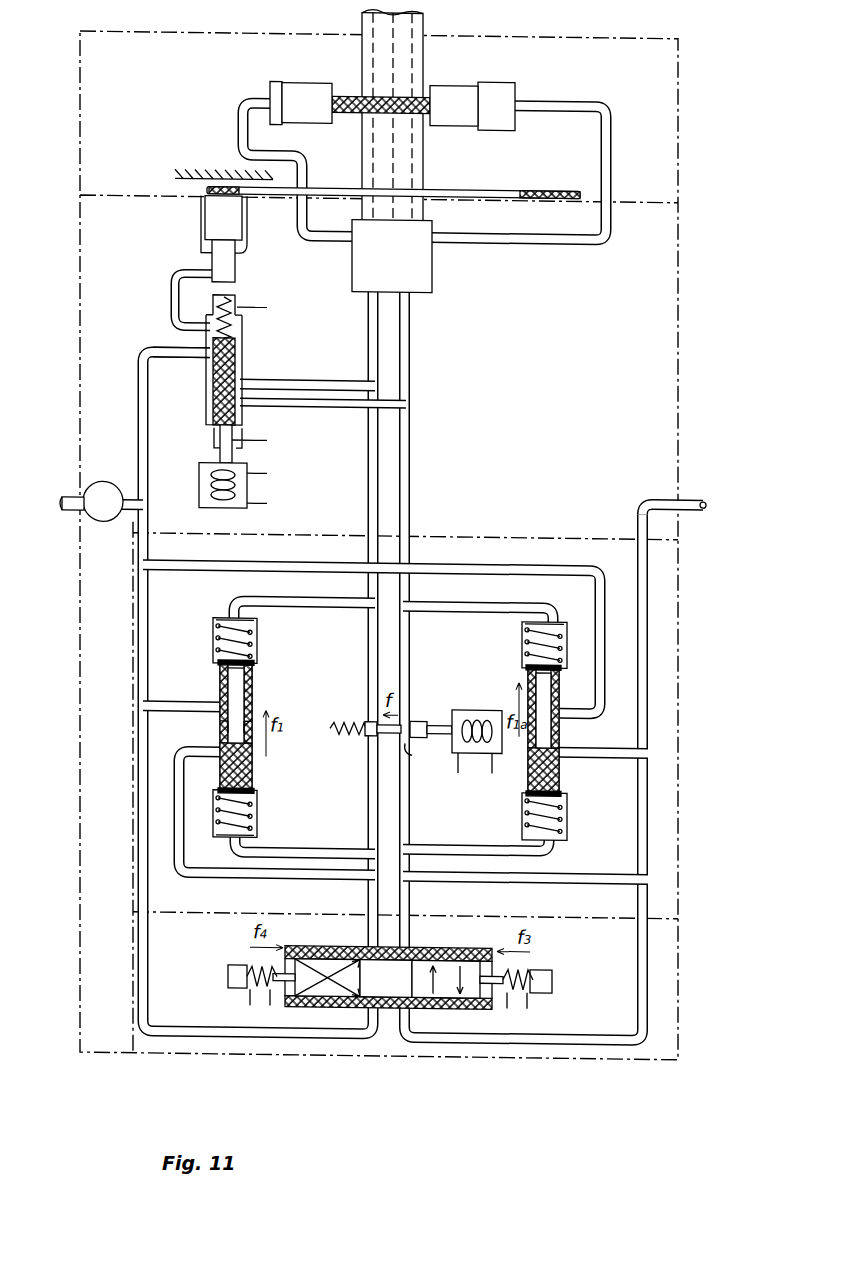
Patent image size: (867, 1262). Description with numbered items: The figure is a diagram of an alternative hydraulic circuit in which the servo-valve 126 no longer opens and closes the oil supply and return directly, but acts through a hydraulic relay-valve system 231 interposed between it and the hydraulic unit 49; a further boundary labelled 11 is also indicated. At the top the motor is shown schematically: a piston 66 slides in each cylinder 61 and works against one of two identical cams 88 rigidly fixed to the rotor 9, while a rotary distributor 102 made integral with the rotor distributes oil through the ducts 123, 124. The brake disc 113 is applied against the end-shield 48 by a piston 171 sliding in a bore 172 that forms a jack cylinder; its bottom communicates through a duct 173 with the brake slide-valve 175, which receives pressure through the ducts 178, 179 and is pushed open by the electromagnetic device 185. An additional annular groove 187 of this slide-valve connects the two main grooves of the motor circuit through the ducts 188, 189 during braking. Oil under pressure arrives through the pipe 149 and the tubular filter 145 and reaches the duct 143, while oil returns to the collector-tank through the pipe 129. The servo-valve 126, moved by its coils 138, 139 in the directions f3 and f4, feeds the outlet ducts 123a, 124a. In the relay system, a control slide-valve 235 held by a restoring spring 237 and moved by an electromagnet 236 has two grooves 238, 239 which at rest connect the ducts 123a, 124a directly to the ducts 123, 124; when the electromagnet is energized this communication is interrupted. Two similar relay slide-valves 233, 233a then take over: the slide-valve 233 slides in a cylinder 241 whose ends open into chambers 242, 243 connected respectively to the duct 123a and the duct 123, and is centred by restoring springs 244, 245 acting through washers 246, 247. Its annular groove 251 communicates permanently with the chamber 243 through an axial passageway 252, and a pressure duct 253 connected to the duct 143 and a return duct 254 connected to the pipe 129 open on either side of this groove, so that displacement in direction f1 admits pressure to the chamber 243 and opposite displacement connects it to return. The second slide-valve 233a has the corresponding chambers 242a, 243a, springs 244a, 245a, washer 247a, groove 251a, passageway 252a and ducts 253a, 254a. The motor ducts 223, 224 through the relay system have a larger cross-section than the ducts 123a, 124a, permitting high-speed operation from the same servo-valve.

The rotor 9 is at (424, 24).
The housing 11 is at (669, 128).
The end-shield 48 is at (245, 178).
The hydraulic unit 49 is at (663, 374).
The cylinder 61 is at (270, 84).
The piston 66 is at (306, 90).
The cam 88 is at (437, 111).
The rotary distributor 102 is at (432, 275).
The brake disc 113 is at (207, 186).
The duct 123 is at (369, 492).
The duct 124 is at (410, 497).
The outlet duct 123a is at (370, 941).
The outlet duct 124a is at (407, 943).
The servo-valve 126 is at (660, 1039).
The pipe 129 is at (648, 983).
The coil 138 is at (515, 972).
The coil 139 is at (250, 972).
The duct 143 is at (133, 856).
The tubular filter 145 is at (110, 488).
The pipe 149 is at (70, 495).
The piston 171 is at (205, 208).
The bore 172 is at (243, 250).
The duct 173 is at (178, 292).
The slide-valve 175 is at (216, 371).
The duct 178 is at (166, 344).
The duct 179 is at (141, 381).
The electromagnetic device 185 is at (199, 485).
The annular groove 187 is at (207, 399).
The duct 188 is at (322, 402).
The duct 189 is at (303, 380).
The duct 223 is at (300, 604).
The duct 224 is at (450, 596).
The hydraulic relay-valve system 231 is at (663, 733).
The relay slide-valve 233 is at (222, 672).
The relay slide-valve 233a is at (530, 676).
The control slide-valve 235 is at (420, 716).
The electromagnet 236 is at (471, 704).
The restoring spring 237 is at (343, 716).
The groove 238 is at (369, 738).
The groove 239 is at (409, 748).
The cylinder 241 is at (245, 760).
The chamber 242 is at (252, 827).
The chamber 242a is at (567, 823).
The chamber 243 is at (258, 648).
The chamber 243a is at (560, 618).
The restoring spring 244 is at (252, 810).
The restoring spring 244a is at (563, 805).
The restoring spring 245 is at (215, 630).
The restoring spring 245a is at (522, 640).
The washer 246 is at (254, 787).
The washer 247 is at (254, 660).
The washer 247a is at (562, 662).
The annular groove 251 is at (221, 722).
The annular groove 251a is at (529, 745).
The axial passageway 252 is at (238, 680).
The axial passageway 252a is at (552, 696).
The duct 253 is at (178, 700).
The duct 253a is at (565, 562).
The duct 254 is at (210, 757).
The duct 254a is at (595, 752).